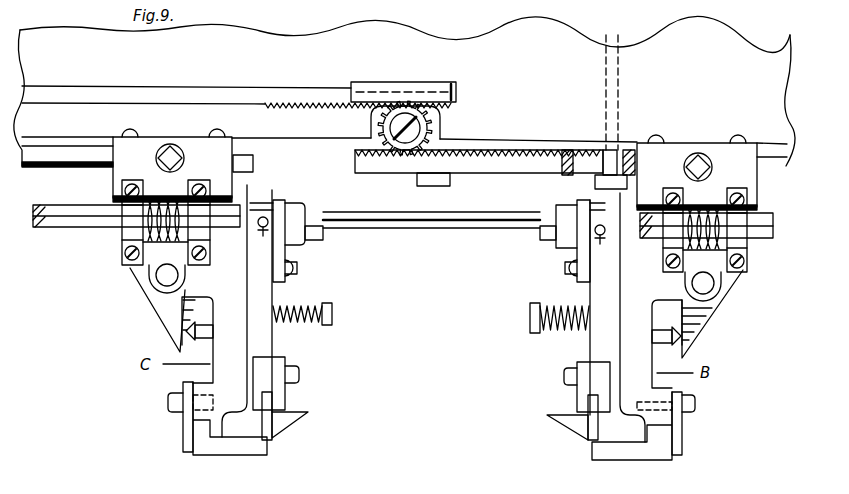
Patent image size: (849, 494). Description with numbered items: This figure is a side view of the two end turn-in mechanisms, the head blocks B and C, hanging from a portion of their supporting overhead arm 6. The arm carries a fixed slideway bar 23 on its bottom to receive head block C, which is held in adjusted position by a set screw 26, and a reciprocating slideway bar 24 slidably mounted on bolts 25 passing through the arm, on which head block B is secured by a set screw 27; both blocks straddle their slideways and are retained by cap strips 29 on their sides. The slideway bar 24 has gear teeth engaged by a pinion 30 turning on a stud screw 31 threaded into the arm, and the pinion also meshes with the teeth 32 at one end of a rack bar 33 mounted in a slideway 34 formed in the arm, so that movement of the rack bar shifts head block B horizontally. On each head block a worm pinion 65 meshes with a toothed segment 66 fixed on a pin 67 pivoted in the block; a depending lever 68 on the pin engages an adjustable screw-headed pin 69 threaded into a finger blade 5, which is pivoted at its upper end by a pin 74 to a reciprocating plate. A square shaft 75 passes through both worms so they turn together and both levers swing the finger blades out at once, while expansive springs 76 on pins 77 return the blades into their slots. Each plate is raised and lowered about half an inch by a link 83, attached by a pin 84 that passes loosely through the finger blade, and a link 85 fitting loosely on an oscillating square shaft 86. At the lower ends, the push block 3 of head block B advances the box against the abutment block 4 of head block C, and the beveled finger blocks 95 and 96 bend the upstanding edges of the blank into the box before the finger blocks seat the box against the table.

The overhead arm 6 is at (521, 42).
The rack bar 33 is at (142, 93).
The teeth of rack bar 32 is at (298, 100).
The slideway 34 is at (416, 83).
The stud screw 31 is at (380, 131).
The pinion 30 is at (432, 131).
The cap strips 29 is at (112, 140).
The set screw 26 is at (172, 147).
The set screw 27 is at (700, 158).
The bolts 25 is at (614, 155).
The slideway bar 24 is at (514, 175).
The slideway bar 23 is at (254, 165).
The square shaft 75 is at (63, 208).
The worm pinion 65 is at (150, 226).
The toothed segment 66 is at (128, 272).
The pin 67 is at (161, 277).
The depending lever 68 is at (170, 314).
The pin 69 is at (207, 328).
The pin 74 is at (258, 217).
The link 83 is at (292, 255).
The link 85 is at (311, 238).
The pin 84 is at (298, 271).
The square shaft 86 is at (445, 232).
The expansive springs 76 is at (310, 298).
The pins 77 is at (333, 320).
The finger blade 5 is at (272, 348).
The finger block 96 is at (285, 421).
The finger block 95 is at (573, 423).
The abutment block 4 is at (241, 444).
The push block 3 is at (652, 456).